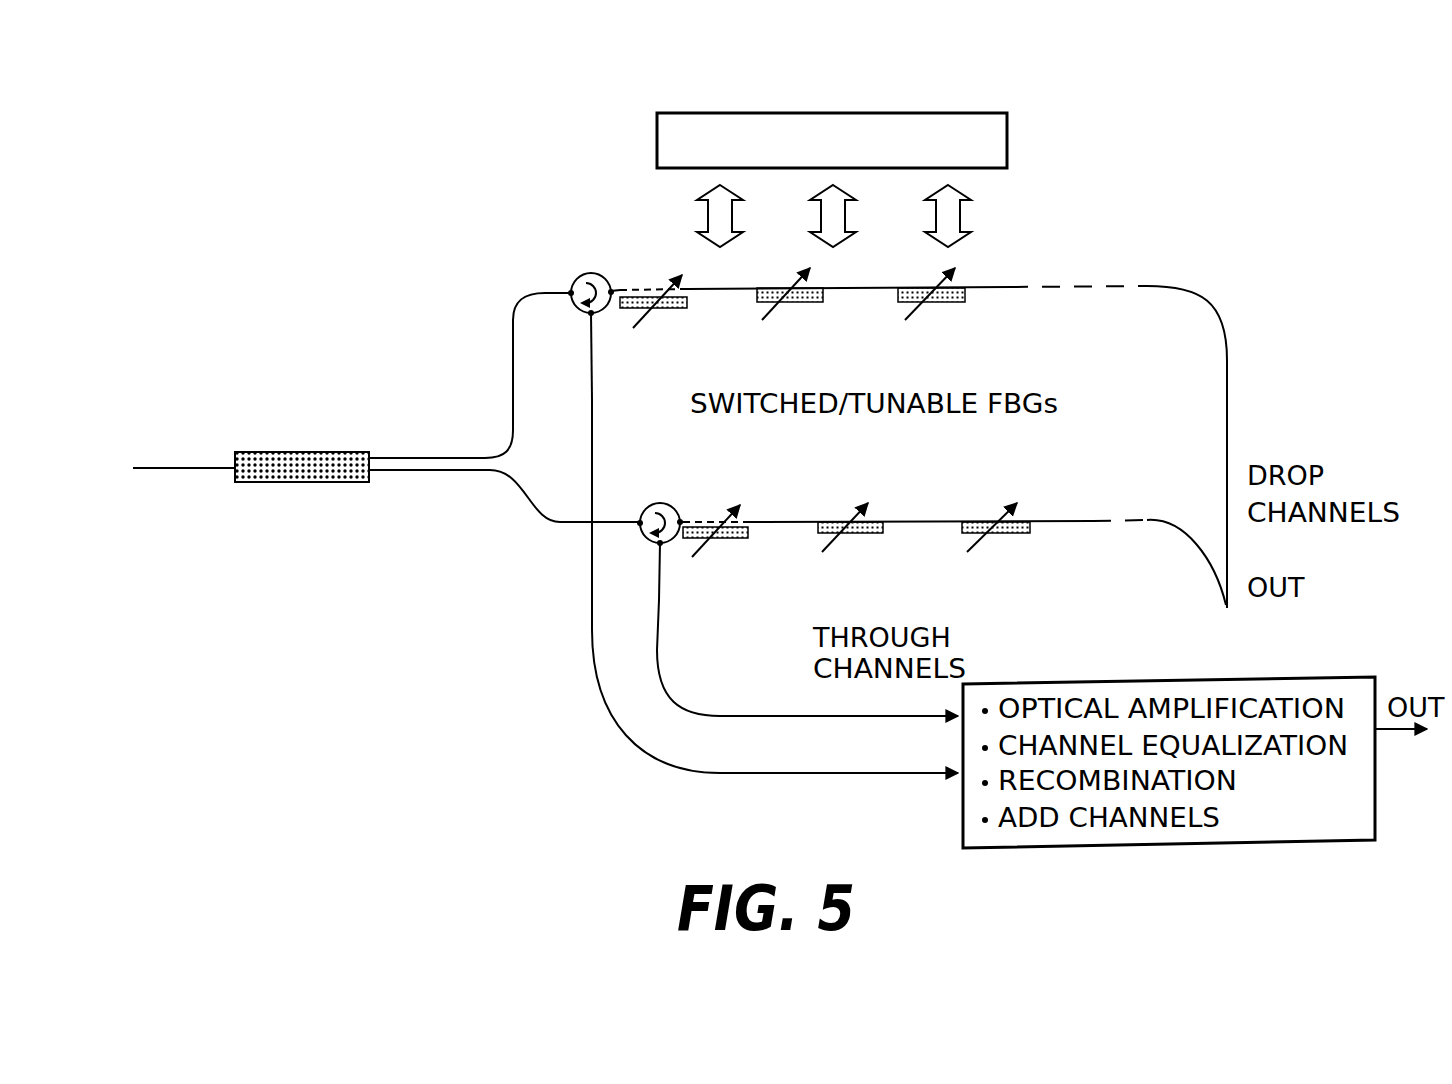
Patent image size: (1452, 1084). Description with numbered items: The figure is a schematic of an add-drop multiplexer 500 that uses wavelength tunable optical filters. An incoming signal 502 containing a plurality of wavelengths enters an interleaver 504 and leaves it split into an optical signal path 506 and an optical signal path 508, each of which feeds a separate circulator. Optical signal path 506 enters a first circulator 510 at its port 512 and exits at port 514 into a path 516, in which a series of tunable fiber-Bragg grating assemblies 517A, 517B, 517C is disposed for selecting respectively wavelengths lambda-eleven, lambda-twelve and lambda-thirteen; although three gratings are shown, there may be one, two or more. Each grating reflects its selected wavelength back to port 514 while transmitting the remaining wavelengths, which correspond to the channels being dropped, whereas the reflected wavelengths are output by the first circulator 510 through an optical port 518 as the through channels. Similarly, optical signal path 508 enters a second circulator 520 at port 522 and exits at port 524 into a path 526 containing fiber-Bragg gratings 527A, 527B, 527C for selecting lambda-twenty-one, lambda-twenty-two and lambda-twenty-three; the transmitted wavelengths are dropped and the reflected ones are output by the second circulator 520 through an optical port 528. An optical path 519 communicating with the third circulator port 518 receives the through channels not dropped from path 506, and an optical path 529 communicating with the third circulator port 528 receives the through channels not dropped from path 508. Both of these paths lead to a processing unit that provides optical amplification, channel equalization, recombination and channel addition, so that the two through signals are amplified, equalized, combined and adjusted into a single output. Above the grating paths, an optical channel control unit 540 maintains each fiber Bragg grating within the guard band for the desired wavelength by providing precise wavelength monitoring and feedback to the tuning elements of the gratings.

The add-drop multiplexer 500 is at (325, 248).
The incoming signal 502 is at (188, 470).
The interleaver 504 is at (316, 452).
The optical signal path 506 is at (493, 450).
The optical signal path 508 is at (500, 477).
The first circulator 510 is at (590, 273).
The port 512 is at (568, 291).
The port 514 is at (613, 290).
The path 516 is at (722, 288).
The tunable fiber-Bragg grating assembly 517A is at (665, 309).
The tunable fiber-Bragg grating assembly 517B is at (798, 303).
The tunable fiber-Bragg grating assembly 517C is at (944, 303).
The optical port 518 is at (590, 320).
The optical path 519 is at (590, 410).
The second circulator 520 is at (656, 503).
The port 522 is at (636, 527).
The port 524 is at (690, 518).
The path 526 is at (790, 522).
The fiber-Bragg grating 527A is at (726, 540).
The fiber-Bragg grating 527B is at (860, 538).
The fiber-Bragg grating 527C is at (1003, 538).
The optical port 528 is at (660, 547).
The optical path 529 is at (657, 625).
The optical channel control unit 540 is at (1007, 130).